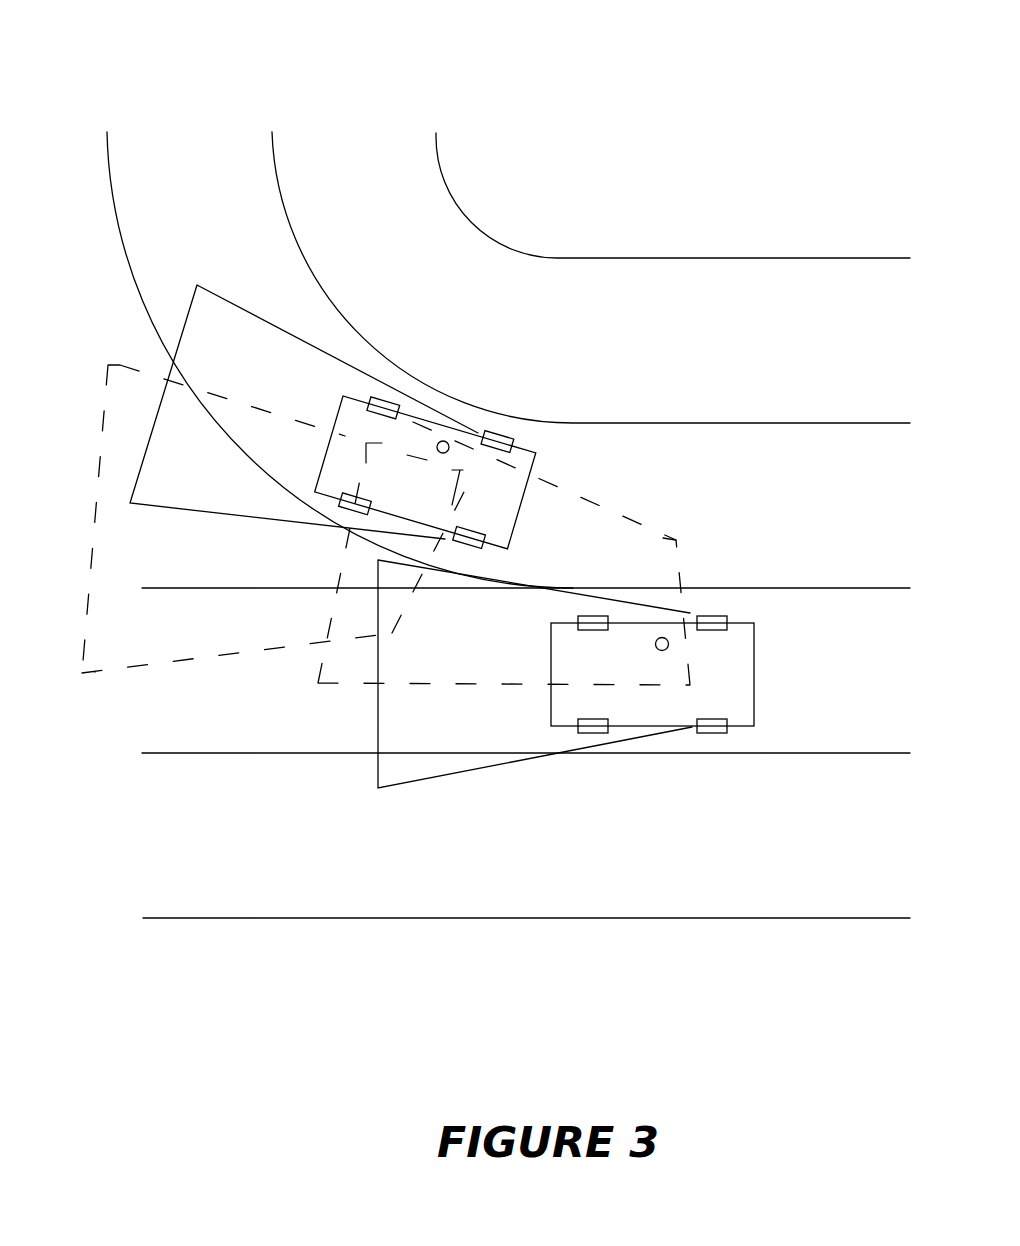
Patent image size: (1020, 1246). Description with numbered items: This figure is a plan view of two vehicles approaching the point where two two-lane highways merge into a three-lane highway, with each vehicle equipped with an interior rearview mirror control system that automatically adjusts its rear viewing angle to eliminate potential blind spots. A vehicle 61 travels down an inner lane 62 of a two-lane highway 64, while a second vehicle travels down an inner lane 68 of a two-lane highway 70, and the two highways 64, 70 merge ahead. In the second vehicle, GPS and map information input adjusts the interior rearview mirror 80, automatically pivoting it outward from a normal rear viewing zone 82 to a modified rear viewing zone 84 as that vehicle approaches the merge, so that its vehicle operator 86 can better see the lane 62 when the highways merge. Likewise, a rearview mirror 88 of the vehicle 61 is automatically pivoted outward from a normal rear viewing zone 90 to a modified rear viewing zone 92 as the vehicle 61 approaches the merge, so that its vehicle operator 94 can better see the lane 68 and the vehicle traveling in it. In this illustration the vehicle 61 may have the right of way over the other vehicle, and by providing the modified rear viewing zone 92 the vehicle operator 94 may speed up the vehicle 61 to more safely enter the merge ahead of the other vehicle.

The vehicle 61 is at (755, 675).
The inner lane 62 is at (197, 730).
The two-lane highway 64 is at (370, 918).
The inner lane 68 is at (185, 168).
The two-lane highway 70 is at (115, 217).
The interior rearview mirror 80 is at (460, 487).
The normal rear viewing zone 82 is at (182, 333).
The modified rear viewing zone 84 is at (103, 435).
The vehicle operator 86 is at (479, 372).
The rearview mirror 88 is at (690, 673).
The normal rear viewing zone 90 is at (377, 730).
The modified rear viewing zone 92 is at (680, 573).
The vehicle operator 94 is at (655, 640).